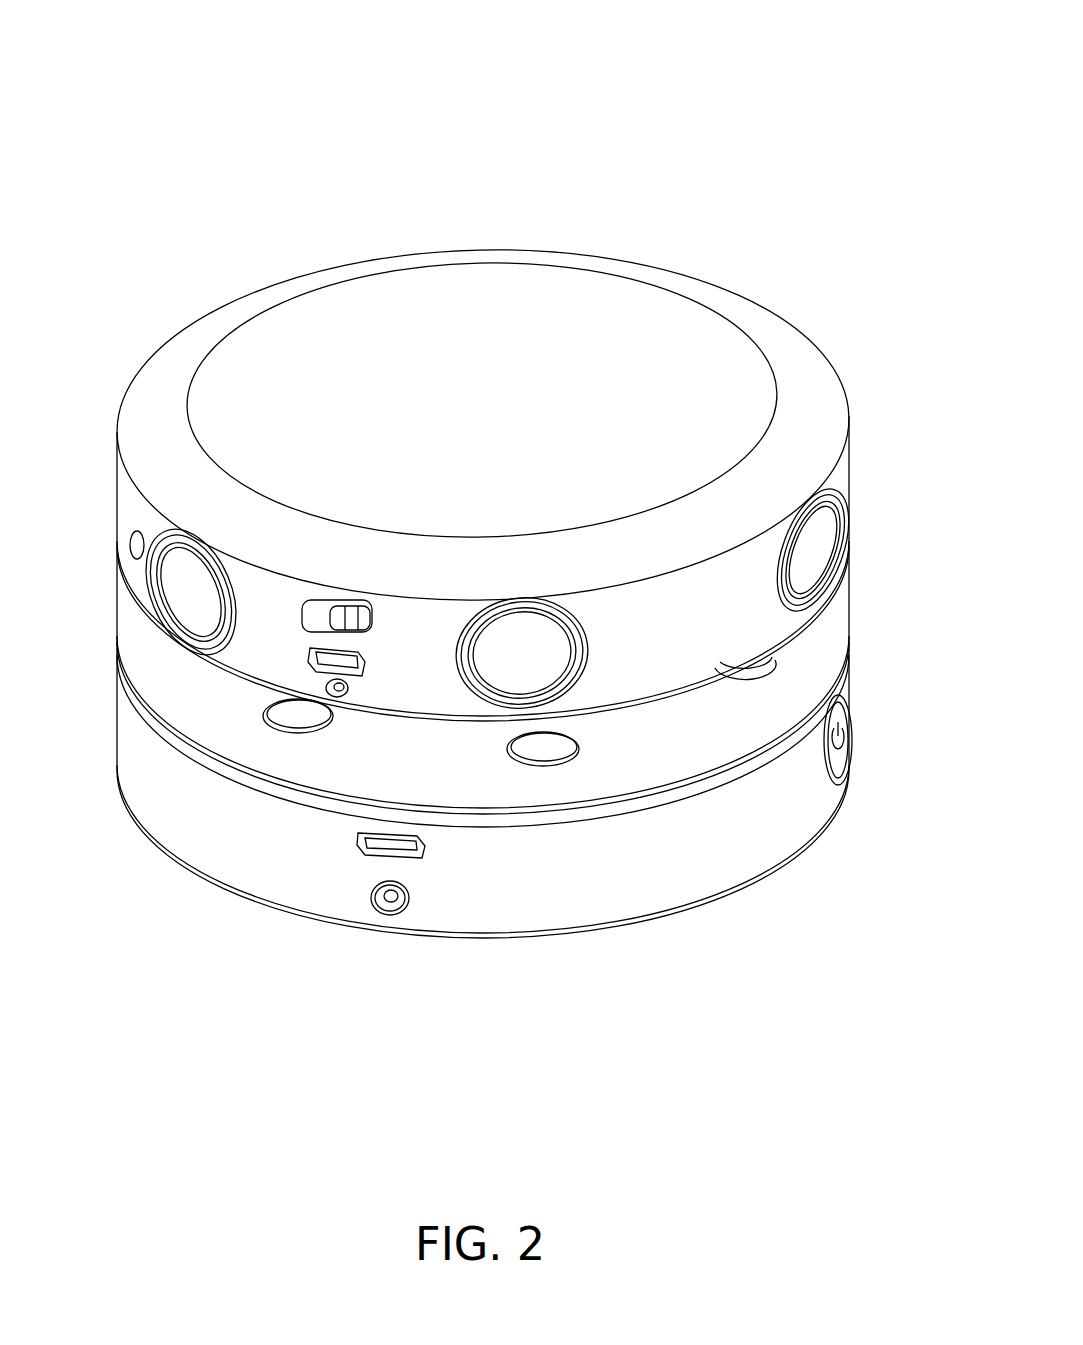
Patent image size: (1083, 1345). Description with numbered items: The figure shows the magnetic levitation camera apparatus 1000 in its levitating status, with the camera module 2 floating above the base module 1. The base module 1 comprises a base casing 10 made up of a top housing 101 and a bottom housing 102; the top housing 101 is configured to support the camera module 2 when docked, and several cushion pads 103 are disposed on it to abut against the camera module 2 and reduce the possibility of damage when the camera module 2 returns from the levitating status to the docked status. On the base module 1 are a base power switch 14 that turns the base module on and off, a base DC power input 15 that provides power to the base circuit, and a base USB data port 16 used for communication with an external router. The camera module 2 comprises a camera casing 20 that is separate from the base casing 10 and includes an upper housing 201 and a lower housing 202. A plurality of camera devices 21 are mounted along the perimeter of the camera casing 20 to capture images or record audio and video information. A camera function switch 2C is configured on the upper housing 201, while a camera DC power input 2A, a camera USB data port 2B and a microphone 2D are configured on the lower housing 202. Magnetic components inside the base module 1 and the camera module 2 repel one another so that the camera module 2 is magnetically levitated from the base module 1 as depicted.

The magnetic levitation camera apparatus 1000 is at (722, 90).
The base module 1 is at (752, 903).
The camera module 2 is at (665, 248).
The base casing 10 is at (931, 632).
The top housing 101 is at (830, 660).
The bottom housing 102 is at (850, 773).
The cushion pads 103 is at (292, 720).
The base power switch 14 is at (830, 785).
The base DC power input 15 is at (392, 905).
The base USB data port 16 is at (405, 852).
The camera casing 20 is at (930, 382).
The upper housing 201 is at (838, 408).
The lower housing 202 is at (848, 528).
The camera device 21 is at (810, 560).
The camera DC power input 2A is at (345, 700).
The camera USB data port 2B is at (313, 657).
The camera function switch 2C is at (300, 618).
The microphone 2D is at (125, 546).